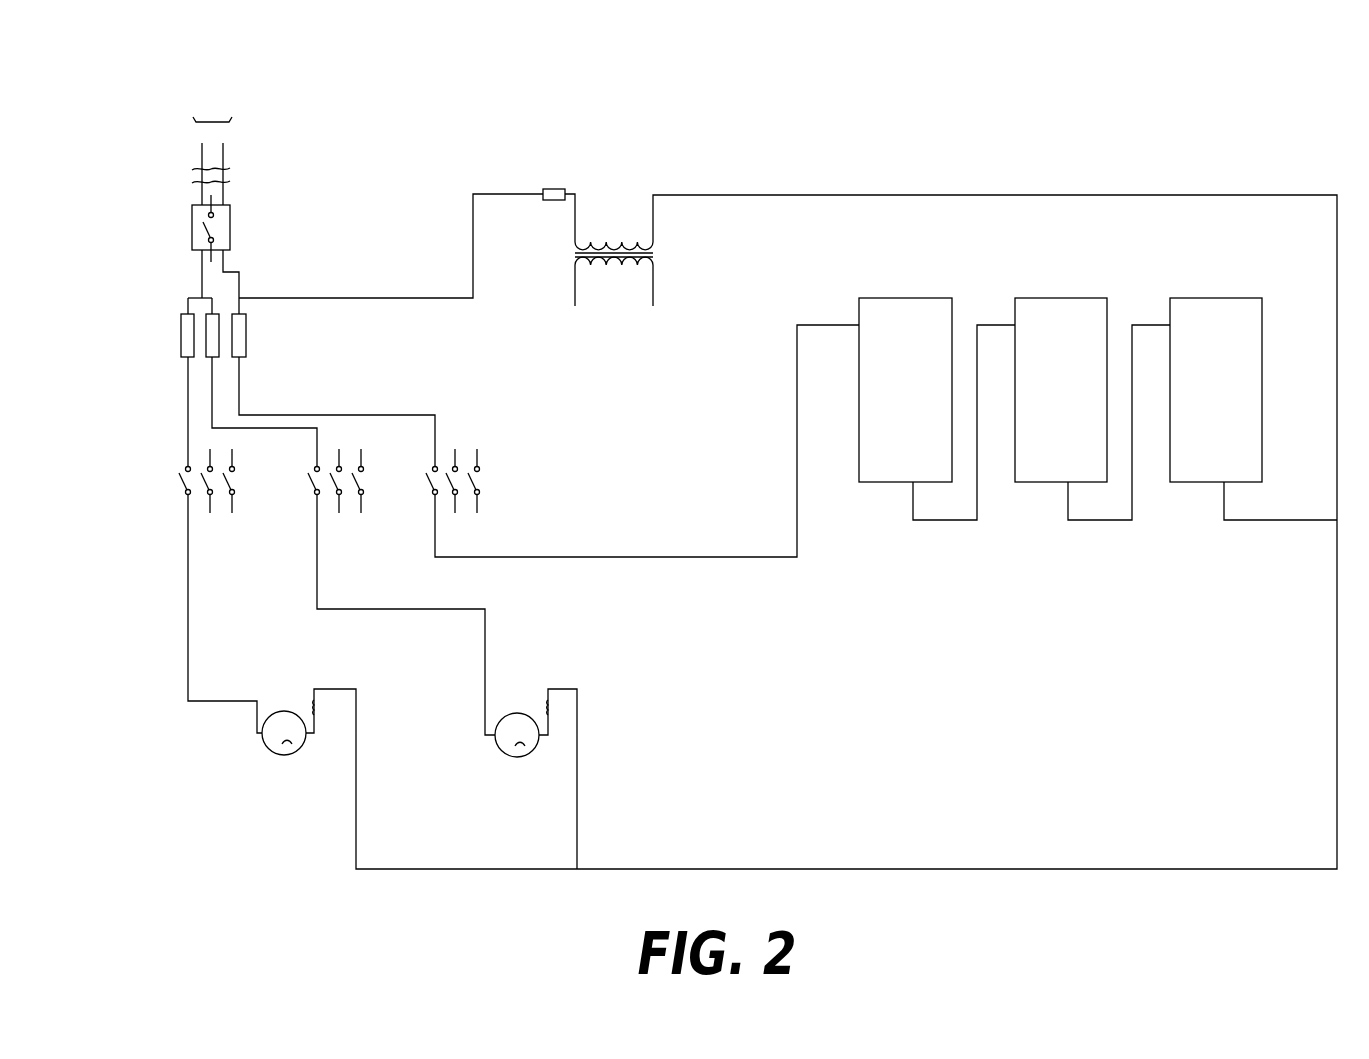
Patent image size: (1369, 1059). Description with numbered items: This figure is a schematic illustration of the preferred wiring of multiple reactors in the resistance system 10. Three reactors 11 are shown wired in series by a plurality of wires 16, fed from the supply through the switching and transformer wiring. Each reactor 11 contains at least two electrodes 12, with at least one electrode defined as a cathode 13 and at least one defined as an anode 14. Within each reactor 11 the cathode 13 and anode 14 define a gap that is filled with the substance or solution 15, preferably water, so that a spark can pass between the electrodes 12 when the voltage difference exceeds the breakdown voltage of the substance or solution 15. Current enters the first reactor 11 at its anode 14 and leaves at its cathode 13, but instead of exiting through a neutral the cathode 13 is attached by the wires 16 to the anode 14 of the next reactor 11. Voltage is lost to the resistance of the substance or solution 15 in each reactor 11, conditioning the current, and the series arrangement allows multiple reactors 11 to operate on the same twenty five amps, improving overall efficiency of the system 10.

The resistance system 10 is at (325, 112).
The reactor 11 is at (907, 298).
The electrodes 12 is at (210, 120).
The cathode 13 is at (185, 174).
The anode 14 is at (239, 174).
The substance or solution 15 is at (224, 175).
The wires 16 is at (347, 296).